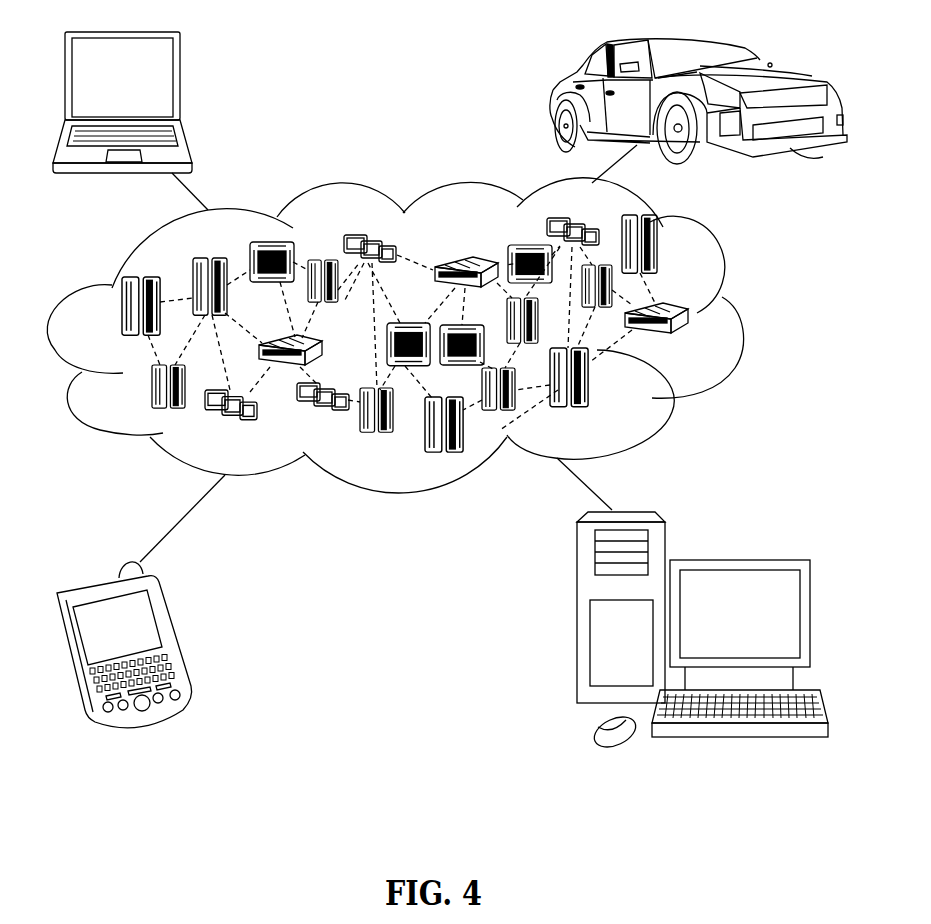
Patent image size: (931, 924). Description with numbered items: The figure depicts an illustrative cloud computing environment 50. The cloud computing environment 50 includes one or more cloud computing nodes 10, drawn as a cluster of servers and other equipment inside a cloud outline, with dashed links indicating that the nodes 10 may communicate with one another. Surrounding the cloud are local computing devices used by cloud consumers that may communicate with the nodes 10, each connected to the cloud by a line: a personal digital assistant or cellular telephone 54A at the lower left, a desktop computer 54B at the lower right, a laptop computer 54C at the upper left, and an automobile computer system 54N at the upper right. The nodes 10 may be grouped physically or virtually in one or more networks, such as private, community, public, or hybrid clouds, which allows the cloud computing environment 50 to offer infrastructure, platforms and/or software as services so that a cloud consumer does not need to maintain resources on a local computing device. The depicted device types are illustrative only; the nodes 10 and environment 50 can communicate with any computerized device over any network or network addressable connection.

The cloud computing nodes 10 is at (692, 343).
The cloud computing environment 50 is at (740, 318).
The personal digital assistant or cellular telephone 54A is at (173, 637).
The desktop computer 54B is at (737, 558).
The laptop computer 54C is at (183, 85).
The automobile computer system 54N is at (556, 100).